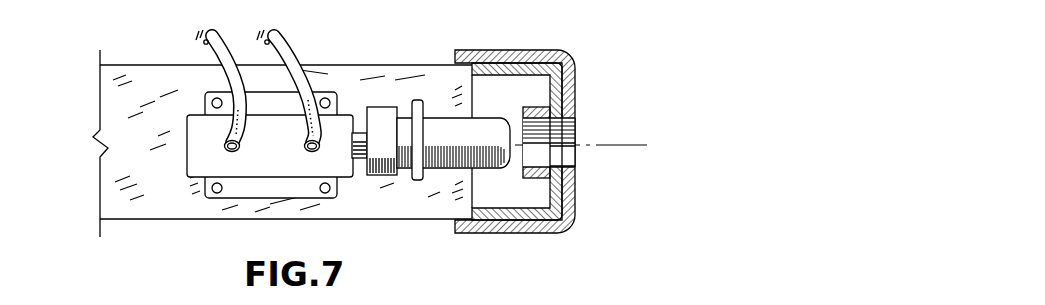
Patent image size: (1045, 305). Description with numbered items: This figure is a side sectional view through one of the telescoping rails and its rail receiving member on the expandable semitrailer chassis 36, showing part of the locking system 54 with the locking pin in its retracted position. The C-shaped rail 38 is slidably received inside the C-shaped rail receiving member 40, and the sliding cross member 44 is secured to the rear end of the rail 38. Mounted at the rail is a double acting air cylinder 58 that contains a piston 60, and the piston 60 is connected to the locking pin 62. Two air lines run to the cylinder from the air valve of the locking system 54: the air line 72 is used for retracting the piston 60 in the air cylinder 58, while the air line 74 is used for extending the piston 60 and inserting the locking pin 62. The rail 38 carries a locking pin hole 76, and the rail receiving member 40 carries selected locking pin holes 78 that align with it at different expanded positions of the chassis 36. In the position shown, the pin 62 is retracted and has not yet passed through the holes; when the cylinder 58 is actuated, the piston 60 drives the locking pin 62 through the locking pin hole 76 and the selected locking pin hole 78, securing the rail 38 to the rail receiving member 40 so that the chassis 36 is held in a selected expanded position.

The expandable semitrailer chassis 36 is at (90, 200).
The sliding cross member 44 is at (175, 200).
The double acting air cylinder 58 is at (258, 165).
The air line 74 is at (223, 55).
The air line 72 is at (290, 55).
The piston 60 is at (361, 158).
The locking pin 62 is at (455, 160).
The locking system 54 is at (580, 155).
The locking pin hole 76 is at (577, 122).
The locking pin hole 78 is at (567, 155).
The telescoping rail 38 is at (572, 187).
The rail receiving member 40 is at (573, 207).